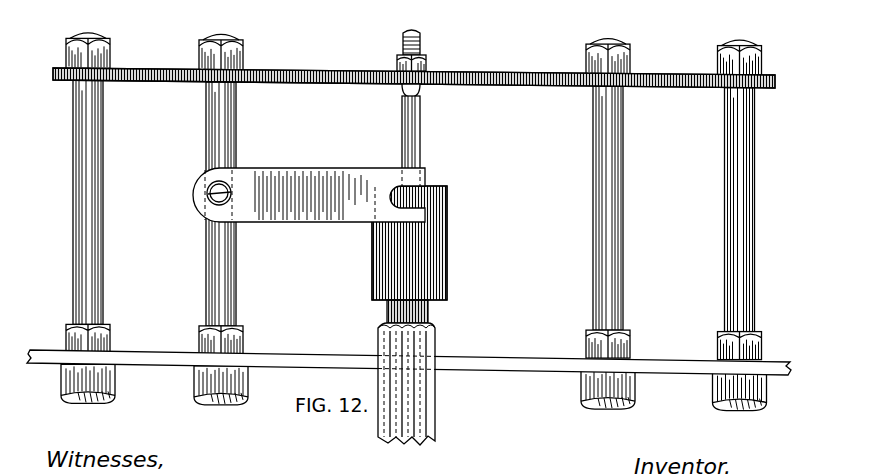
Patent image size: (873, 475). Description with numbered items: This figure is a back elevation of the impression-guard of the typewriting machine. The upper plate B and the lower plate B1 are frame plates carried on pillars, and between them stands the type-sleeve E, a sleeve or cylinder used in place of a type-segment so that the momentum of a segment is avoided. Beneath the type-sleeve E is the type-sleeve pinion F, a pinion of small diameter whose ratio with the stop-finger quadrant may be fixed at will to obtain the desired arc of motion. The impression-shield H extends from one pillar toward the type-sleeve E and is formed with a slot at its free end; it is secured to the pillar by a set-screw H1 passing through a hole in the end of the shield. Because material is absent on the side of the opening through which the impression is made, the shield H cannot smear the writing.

The upper plate B is at (518, 78).
The lower plate B1 is at (533, 367).
The impression-shield H is at (361, 174).
The set-screw H1 is at (212, 185).
The type-sleeve E is at (440, 215).
The type-sleeve pinion F is at (430, 388).